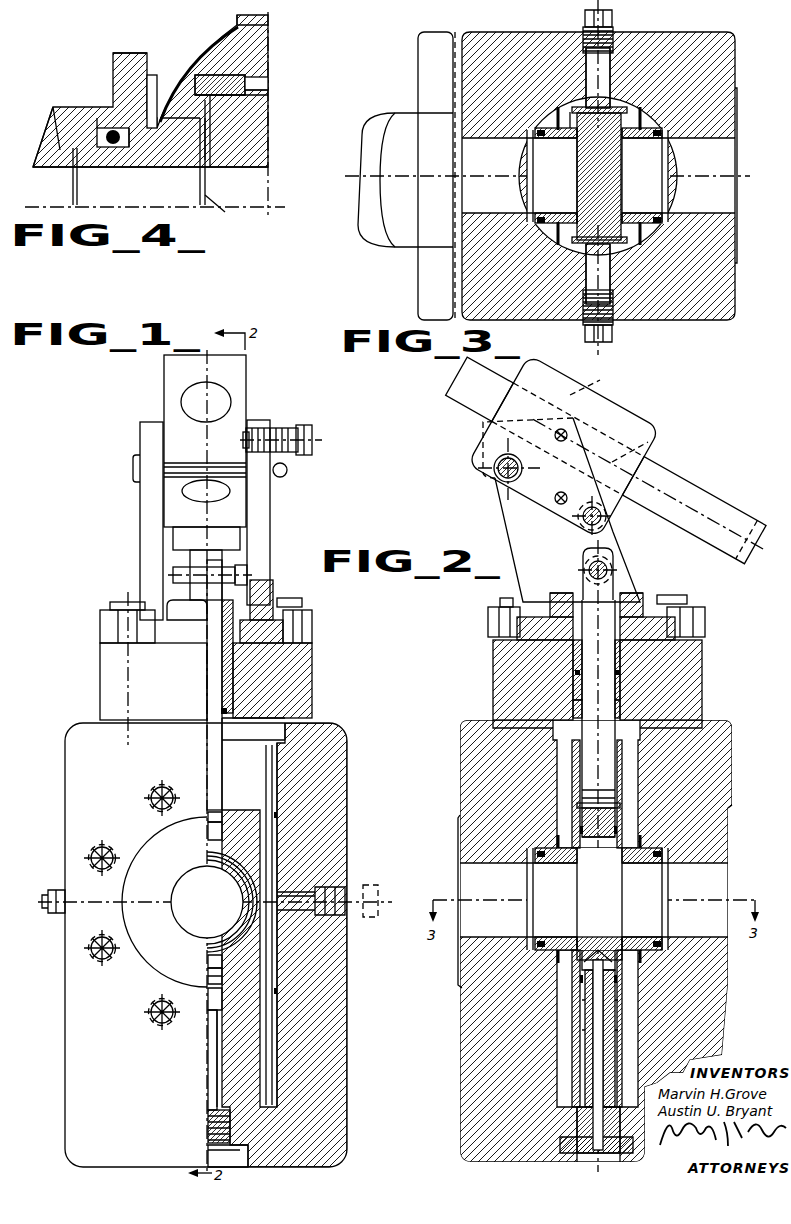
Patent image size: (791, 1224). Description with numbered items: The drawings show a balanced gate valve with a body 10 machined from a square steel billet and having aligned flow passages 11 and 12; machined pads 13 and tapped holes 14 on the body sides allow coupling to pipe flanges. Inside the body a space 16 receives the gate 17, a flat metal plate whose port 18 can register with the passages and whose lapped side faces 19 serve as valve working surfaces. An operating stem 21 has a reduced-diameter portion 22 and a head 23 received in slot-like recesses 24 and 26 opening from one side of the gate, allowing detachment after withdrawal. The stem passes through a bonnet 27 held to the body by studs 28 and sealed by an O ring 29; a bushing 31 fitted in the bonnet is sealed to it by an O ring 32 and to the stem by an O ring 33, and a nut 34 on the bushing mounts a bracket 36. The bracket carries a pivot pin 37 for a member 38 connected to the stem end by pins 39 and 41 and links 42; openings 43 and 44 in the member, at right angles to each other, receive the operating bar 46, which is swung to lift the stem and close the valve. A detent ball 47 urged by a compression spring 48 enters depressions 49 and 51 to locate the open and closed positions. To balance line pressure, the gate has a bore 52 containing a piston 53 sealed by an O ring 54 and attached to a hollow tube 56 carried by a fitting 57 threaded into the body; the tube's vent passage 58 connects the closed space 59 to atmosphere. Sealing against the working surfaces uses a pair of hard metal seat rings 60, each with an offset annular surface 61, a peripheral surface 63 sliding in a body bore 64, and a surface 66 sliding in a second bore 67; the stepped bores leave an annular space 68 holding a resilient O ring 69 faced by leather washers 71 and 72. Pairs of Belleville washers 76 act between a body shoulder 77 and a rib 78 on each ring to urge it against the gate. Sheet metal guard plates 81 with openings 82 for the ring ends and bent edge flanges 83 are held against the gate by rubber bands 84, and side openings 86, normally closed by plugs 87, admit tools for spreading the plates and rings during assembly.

In FIG. 4, the body 10 is at (44, 152).
In FIG. 3, the body 10 is at (698, 38).
In FIG. 1, the body 10 is at (72, 806).
In FIG. 2, the body 10 is at (716, 720).
In FIG. 3, the passage 11 is at (470, 214).
In FIG. 1, the passage 11 is at (172, 930).
In FIG. 2, the passage 11 is at (470, 874).
In FIG. 3, the passage 12 is at (725, 214).
In FIG. 1, the passage 12 is at (210, 901).
In FIG. 2, the passage 12 is at (722, 868).
In FIG. 3, the machined pads 13 is at (462, 232).
In FIG. 1, the machined pads 13 is at (127, 919).
In FIG. 2, the machined pads 13 is at (461, 970).
In FIG. 1, the tapped holes 14 is at (105, 962).
In FIG. 4, the space 16 is at (262, 46).
In FIG. 3, the space 16 is at (625, 96).
In FIG. 1, the space 16 is at (280, 762).
In FIG. 2, the space 16 is at (557, 773).
In FIG. 4, the gate 17 is at (262, 141).
In FIG. 3, the gate 17 is at (592, 142).
In FIG. 1, the gate 17 is at (262, 864).
In FIG. 2, the gate 17 is at (608, 945).
In FIG. 4, the port 18 is at (262, 171).
In FIG. 3, the port 18 is at (610, 190).
In FIG. 1, the port 18 is at (210, 870).
In FIG. 2, the port 18 is at (582, 908).
In FIG. 4, the side faces 19 is at (223, 210).
In FIG. 3, the side faces 19 is at (622, 163).
In FIG. 2, the side faces 19 is at (574, 895).
In FIG. 1, the operating stem 21 is at (210, 667).
In FIG. 2, the operating stem 21 is at (612, 716).
In FIG. 1, the reduced-diameter portion 22 is at (210, 818).
In FIG. 2, the reduced-diameter portion 22 is at (616, 814).
In FIG. 1, the head 23 is at (208, 827).
In FIG. 2, the head 23 is at (612, 830).
In FIG. 2, the slot-like recess 24 is at (575, 806).
In FIG. 2, the slot-like recess 26 is at (572, 822).
In FIG. 1, the bonnet 27 is at (102, 673).
In FIG. 2, the bonnet 27 is at (690, 656).
In FIG. 1, the studs 28 is at (110, 603).
In FIG. 2, the studs 28 is at (683, 597).
In FIG. 1, the O ring 29 is at (318, 740).
In FIG. 2, the O ring 29 is at (518, 724).
In FIG. 1, the bushing 31 is at (222, 685).
In FIG. 2, the bushing 31 is at (575, 654).
In FIG. 2, the O ring 32 is at (577, 674).
In FIG. 1, the O ring 33 is at (221, 710).
In FIG. 2, the O ring 33 is at (577, 702).
In FIG. 1, the nut 34 is at (168, 606).
In FIG. 2, the nut 34 is at (641, 600).
In FIG. 1, the bracket 36 is at (142, 518).
In FIG. 2, the bracket 36 is at (503, 520).
In FIG. 1, the pivot pin 37 is at (134, 466).
In FIG. 2, the pivot pin 37 is at (501, 478).
In FIG. 1, the member 38 is at (168, 373).
In FIG. 2, the member 38 is at (617, 406).
In FIG. 1, the pin 39 is at (252, 526).
In FIG. 2, the pin 39 is at (606, 518).
In FIG. 1, the pin 41 is at (236, 563).
In FIG. 2, the pin 41 is at (588, 571).
In FIG. 1, the links 42 is at (185, 543).
In FIG. 2, the links 42 is at (582, 548).
In FIG. 1, the opening 43 is at (181, 402).
In FIG. 2, the opening 43 is at (655, 447).
In FIG. 1, the opening 44 is at (182, 493).
In FIG. 2, the opening 44 is at (588, 395).
In FIG. 2, the bar 46 is at (727, 496).
In FIG. 1, the detent ball 47 is at (255, 430).
In FIG. 1, the compression spring 48 is at (280, 430).
In FIG. 1, the depression 49 is at (243, 443).
In FIG. 2, the depression 49 is at (560, 429).
In FIG. 1, the depression 51 is at (248, 502).
In FIG. 2, the depression 51 is at (555, 500).
In FIG. 1, the bore 52 is at (222, 1042).
In FIG. 2, the bore 52 is at (613, 1027).
In FIG. 1, the piston 53 is at (208, 1000).
In FIG. 2, the piston 53 is at (613, 1002).
In FIG. 1, the O ring 54 is at (208, 978).
In FIG. 2, the O ring 54 is at (615, 979).
In FIG. 1, the hollow rod 56 is at (208, 1062).
In FIG. 2, the hollow rod 56 is at (603, 1055).
In FIG. 1, the fitting 57 is at (207, 1142).
In FIG. 2, the fitting 57 is at (576, 1146).
In FIG. 2, the vent passage 58 is at (593, 1043).
In FIG. 1, the closed space 59 is at (208, 962).
In FIG. 2, the closed space 59 is at (580, 968).
In FIG. 4, the seat rings 60 is at (166, 170).
In FIG. 3, the seat rings 60 is at (637, 224).
In FIG. 1, the seat rings 60 is at (240, 886).
In FIG. 2, the seat rings 60 is at (637, 940).
In FIG. 4, the offset annular surface 61 is at (210, 152).
In FIG. 3, the offset annular surface 61 is at (565, 168).
In FIG. 2, the offset annular surface 61 is at (594, 899).
In FIG. 4, the cylindrical peripheral surface 63 is at (140, 150).
In FIG. 4, the cylindrical bore 64 is at (120, 128).
In FIG. 4, the cylindrical surface 66 is at (62, 168).
In FIG. 4, the cylindrical body bore 67 is at (78, 150).
In FIG. 4, the annular space 68 is at (114, 148).
In FIG. 4, the O ring 69 is at (105, 130).
In FIG. 4, the washer 71 is at (78, 170).
In FIG. 4, the washer 72 is at (148, 90).
In FIG. 4, the spring metal washers 76 is at (176, 72).
In FIG. 4, the shoulder 77 is at (140, 76).
In FIG. 4, the rib 78 is at (200, 116).
In FIG. 4, the guard plates 81 is at (222, 78).
In FIG. 3, the guard plates 81 is at (573, 246).
In FIG. 1, the guard plates 81 is at (274, 784).
In FIG. 2, the guard plates 81 is at (574, 1015).
In FIG. 4, the openings 82 is at (210, 128).
In FIG. 3, the openings 82 is at (592, 222).
In FIG. 2, the openings 82 is at (599, 899).
In FIG. 4, the longitudinal edge portions 83 is at (245, 78).
In FIG. 1, the longitudinal edge portions 83 is at (268, 832).
In FIG. 4, the rubber bands 84 is at (266, 74).
In FIG. 1, the rubber bands 84 is at (276, 802).
In FIG. 2, the rubber bands 84 is at (618, 816).
In FIG. 3, the side openings 86 is at (610, 72).
In FIG. 3, the plugs 87 is at (585, 19).